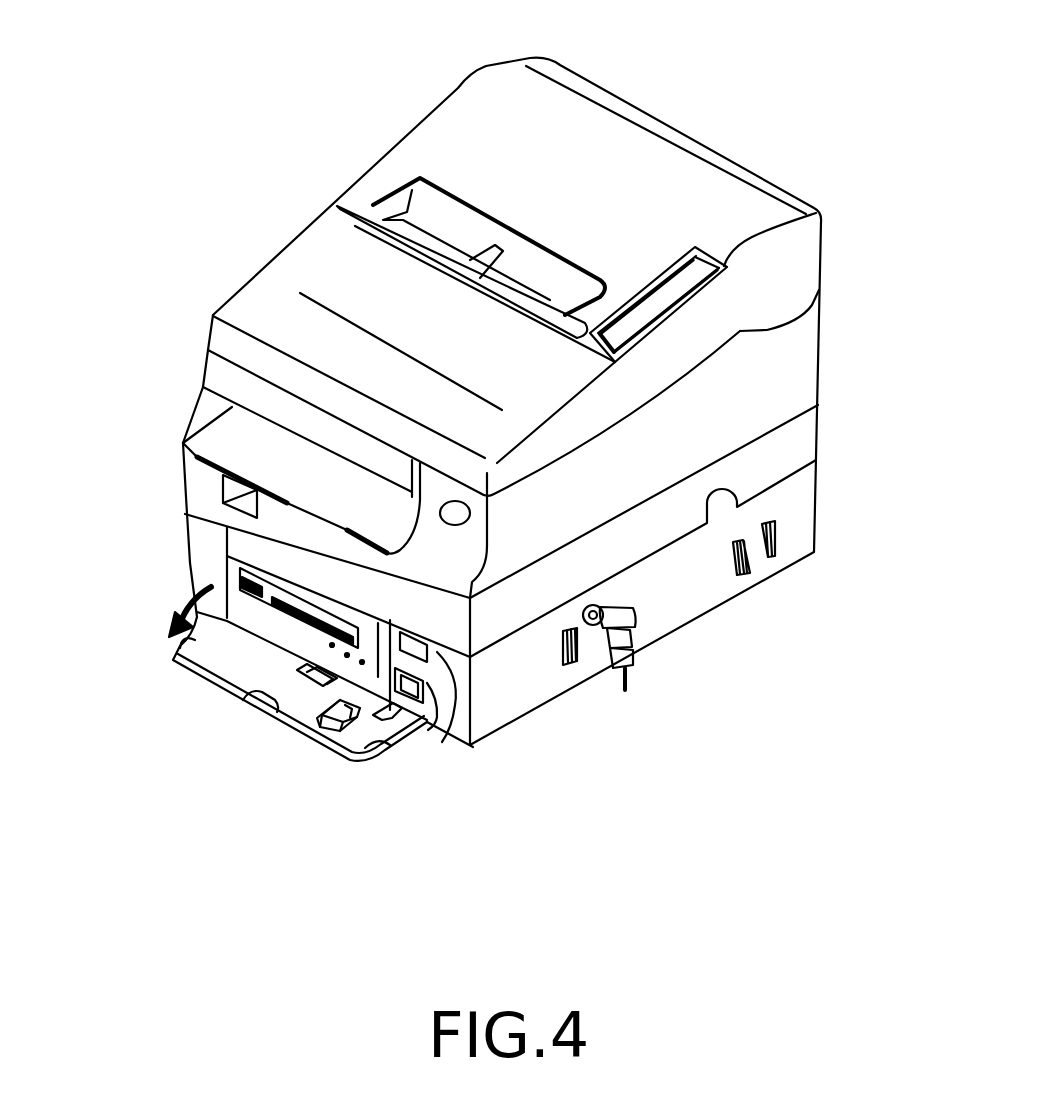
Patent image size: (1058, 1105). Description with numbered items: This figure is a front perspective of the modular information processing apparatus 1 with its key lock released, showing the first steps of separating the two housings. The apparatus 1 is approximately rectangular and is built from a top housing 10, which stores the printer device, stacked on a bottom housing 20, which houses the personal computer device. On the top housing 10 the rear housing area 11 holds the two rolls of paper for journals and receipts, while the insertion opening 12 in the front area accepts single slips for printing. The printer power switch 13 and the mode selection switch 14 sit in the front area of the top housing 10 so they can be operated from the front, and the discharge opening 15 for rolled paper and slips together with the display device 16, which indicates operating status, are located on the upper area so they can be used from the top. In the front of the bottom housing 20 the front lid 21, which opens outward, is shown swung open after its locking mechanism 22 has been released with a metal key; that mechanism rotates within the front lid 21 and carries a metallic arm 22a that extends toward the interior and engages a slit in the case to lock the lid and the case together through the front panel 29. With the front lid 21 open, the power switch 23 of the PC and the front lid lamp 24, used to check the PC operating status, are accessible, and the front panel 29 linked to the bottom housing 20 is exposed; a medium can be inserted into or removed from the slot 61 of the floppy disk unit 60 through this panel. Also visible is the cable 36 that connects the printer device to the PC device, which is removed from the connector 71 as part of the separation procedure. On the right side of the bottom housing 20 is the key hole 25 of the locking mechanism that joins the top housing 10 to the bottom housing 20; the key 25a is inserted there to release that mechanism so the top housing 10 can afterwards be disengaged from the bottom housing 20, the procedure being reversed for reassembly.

The information processing apparatus 1 is at (907, 313).
The top housing 10 is at (838, 213).
The rear housing area 11 is at (593, 122).
The insertion opening 12 is at (252, 437).
The printer power switch 13 is at (222, 497).
The mode selection switch 14 is at (472, 515).
The discharge opening 15 is at (326, 207).
The display device 16 is at (700, 272).
The bottom housing 20 is at (838, 457).
The front lid 21 is at (233, 703).
The key hole (locking mechanism) 22 is at (312, 735).
The metallic arm 22a is at (352, 720).
The power switch 23 is at (418, 727).
The front lid lamp 24 is at (333, 653).
The key hole (locking mechanism) 25 is at (637, 606).
The key 25a is at (640, 656).
The front panel 29 is at (237, 545).
The cable 36 is at (478, 720).
The floppy disk unit (front face) 60 is at (170, 658).
The slot 61 is at (257, 610).
The connector 71 is at (440, 712).